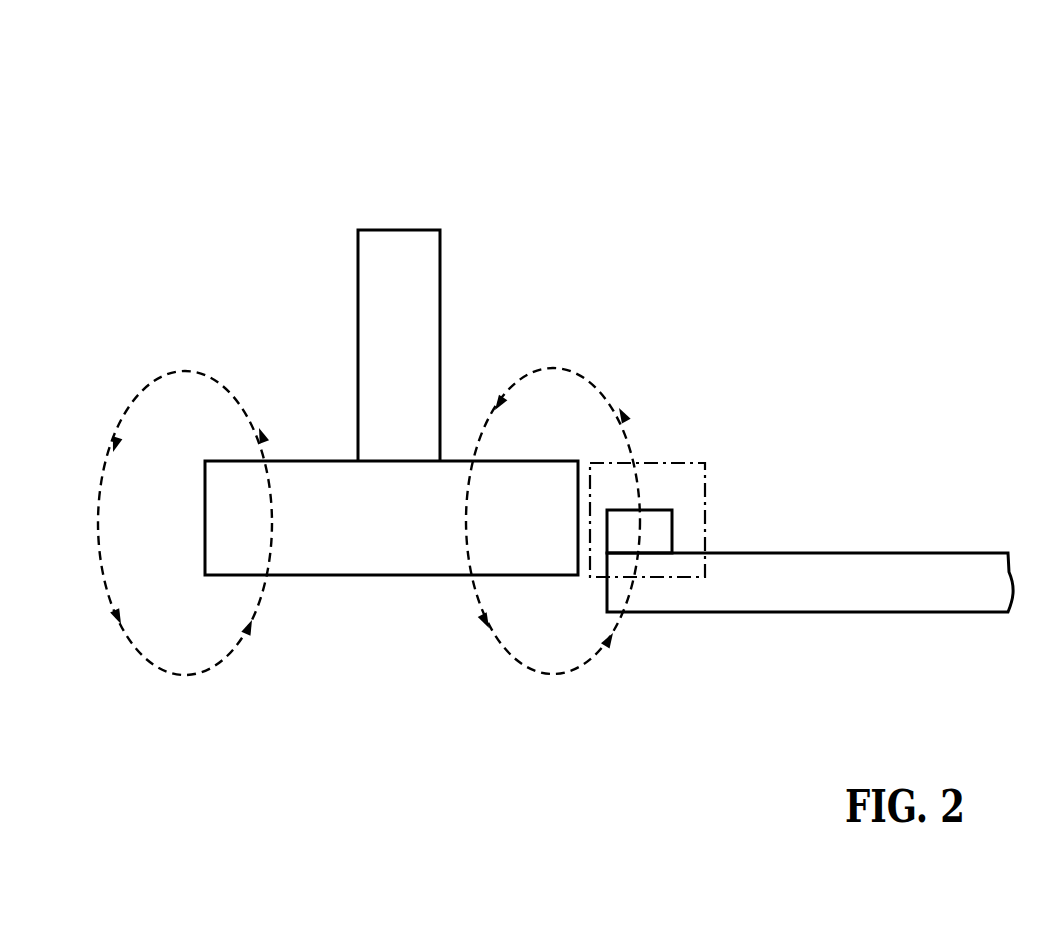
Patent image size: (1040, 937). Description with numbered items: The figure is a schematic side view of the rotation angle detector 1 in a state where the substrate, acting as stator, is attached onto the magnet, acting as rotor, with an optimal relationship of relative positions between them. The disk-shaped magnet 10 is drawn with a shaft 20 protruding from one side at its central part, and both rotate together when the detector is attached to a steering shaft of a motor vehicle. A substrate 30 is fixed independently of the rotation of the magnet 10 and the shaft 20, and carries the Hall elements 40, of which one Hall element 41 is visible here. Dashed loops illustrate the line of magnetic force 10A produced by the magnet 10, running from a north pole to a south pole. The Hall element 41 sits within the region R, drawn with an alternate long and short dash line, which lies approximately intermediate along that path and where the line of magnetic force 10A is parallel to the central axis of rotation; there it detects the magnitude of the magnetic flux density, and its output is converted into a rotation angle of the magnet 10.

The rotation angle detector 1 is at (610, 128).
The magnet 10 is at (375, 577).
The line of magnetic force 10A is at (176, 676).
The shaft 20 is at (440, 270).
The substrate 30 is at (737, 612).
The Hall elements 40 is at (775, 511).
The Hall element 41 is at (672, 526).
The region R is at (705, 462).